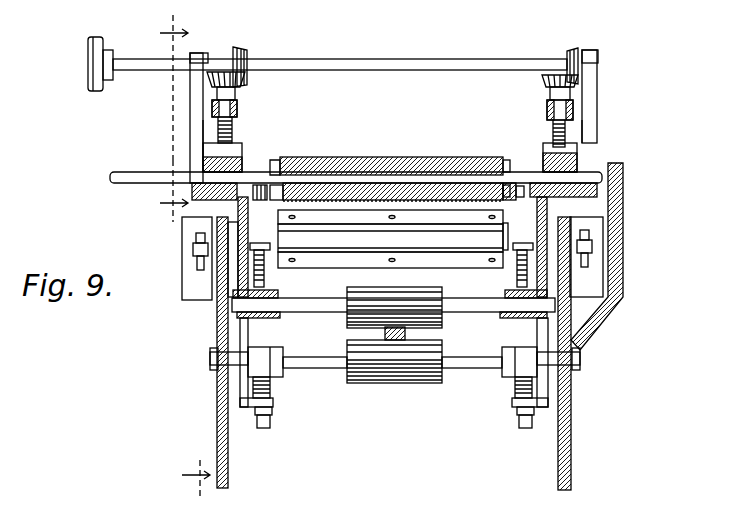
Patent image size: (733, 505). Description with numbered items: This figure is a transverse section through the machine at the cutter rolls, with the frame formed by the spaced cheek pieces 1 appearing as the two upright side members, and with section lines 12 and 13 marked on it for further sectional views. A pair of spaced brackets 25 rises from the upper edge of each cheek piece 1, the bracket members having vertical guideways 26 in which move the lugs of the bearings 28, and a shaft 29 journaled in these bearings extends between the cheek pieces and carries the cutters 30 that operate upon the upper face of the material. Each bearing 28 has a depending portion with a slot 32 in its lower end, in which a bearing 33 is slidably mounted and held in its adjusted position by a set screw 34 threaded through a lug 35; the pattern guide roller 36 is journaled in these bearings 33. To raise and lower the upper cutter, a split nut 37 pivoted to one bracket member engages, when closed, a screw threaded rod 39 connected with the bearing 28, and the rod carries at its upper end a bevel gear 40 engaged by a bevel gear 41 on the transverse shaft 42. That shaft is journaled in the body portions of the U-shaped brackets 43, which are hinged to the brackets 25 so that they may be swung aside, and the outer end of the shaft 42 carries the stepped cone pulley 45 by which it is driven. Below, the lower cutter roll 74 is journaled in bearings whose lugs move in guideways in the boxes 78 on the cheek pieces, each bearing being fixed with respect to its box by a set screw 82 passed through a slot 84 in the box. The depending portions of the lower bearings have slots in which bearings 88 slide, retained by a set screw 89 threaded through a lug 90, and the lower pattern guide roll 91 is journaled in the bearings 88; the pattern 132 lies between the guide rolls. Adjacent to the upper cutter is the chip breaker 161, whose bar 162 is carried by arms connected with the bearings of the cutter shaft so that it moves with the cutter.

The cheek piece 1 is at (228, 449).
The section line 12— 12 is at (162, 118).
The section line 13— 13 is at (188, 474).
The bracket 25 is at (203, 152).
The vertical guideway 26 is at (202, 137).
The bearing 28 is at (232, 180).
The shaft 29 is at (148, 182).
The cutter 30 is at (385, 158).
The slot 32 is at (245, 285).
The bearing 33 is at (500, 318).
The set screw 34 is at (272, 247).
The lug 35 is at (268, 262).
The pattern guide roller 36 is at (394, 313).
The split nut 37 is at (237, 104).
The screw threaded rod 39 is at (233, 126).
The bevel gear 40 is at (190, 82).
The bevel gear 41 is at (247, 55).
The transverse shaft 42 is at (415, 67).
The U-shaped bracket 43 is at (213, 47).
The stepped cone pulley 45 is at (97, 91).
The lower cutter roll 74 is at (390, 239).
The box 78 is at (193, 251).
The set screw 82 is at (200, 263).
The slot 84 is at (200, 243).
The bearing 88 is at (270, 372).
The set screw 89 is at (270, 388).
The lug 90 is at (272, 419).
The pattern guide roll 91 is at (394, 361).
The pattern 132 is at (500, 359).
The chip breaker 161 is at (528, 178).
The bar 162 is at (272, 200).